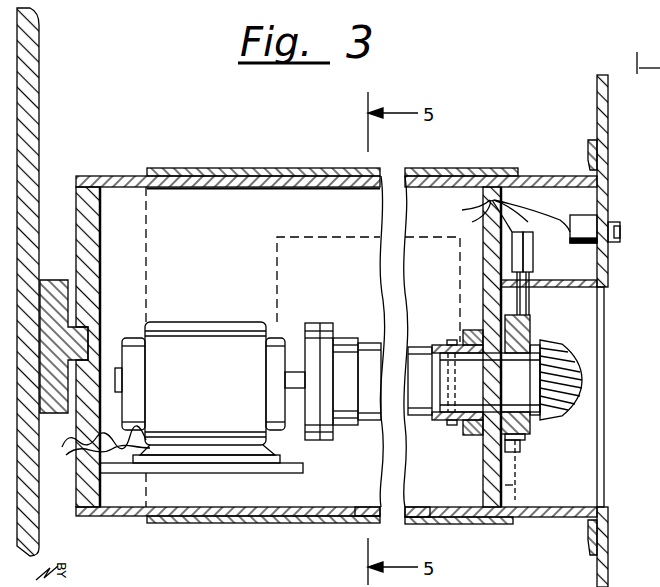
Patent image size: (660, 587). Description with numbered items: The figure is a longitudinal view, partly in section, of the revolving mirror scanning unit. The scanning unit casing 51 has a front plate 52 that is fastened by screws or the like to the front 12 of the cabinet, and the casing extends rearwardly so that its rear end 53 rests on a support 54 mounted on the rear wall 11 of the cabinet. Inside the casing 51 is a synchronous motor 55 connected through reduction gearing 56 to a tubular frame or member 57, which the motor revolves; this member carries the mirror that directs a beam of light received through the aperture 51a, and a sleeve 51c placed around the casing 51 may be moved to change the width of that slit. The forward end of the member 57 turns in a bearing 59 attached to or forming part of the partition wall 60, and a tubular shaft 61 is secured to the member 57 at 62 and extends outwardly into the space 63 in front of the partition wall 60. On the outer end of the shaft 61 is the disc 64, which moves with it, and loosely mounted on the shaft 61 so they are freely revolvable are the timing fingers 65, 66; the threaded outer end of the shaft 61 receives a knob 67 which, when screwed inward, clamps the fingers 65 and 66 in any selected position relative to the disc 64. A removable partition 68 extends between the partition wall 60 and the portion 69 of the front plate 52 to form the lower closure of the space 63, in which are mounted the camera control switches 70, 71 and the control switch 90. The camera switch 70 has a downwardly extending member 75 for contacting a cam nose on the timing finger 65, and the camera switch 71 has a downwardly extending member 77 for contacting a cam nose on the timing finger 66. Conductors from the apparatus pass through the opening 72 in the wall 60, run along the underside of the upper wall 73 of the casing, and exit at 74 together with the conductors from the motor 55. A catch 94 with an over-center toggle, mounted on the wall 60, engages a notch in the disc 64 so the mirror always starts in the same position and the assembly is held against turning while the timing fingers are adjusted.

The rear wall 11 is at (40, 514).
The front of the cabinet 12 is at (603, 152).
The scanning unit casing 51 is at (246, 182).
The aperture 51a is at (366, 518).
The sleeve 51c is at (196, 168).
The front plate 52 is at (610, 187).
The rear end 53 is at (76, 212).
The support 54 is at (50, 280).
The synchronous motor 55 is at (180, 394).
The reduction gearing 56 is at (318, 323).
The tubular frame or member 57 is at (372, 427).
The bearing 59 is at (468, 343).
The partition wall 60 is at (483, 258).
The tubular shaft 61 is at (470, 428).
The securing point 62 is at (461, 346).
The space 63 is at (596, 448).
The disc 64 is at (518, 455).
The timing finger 65 is at (520, 438).
The timing finger 66 is at (531, 425).
The knob 67 is at (562, 366).
The removable partition 68 is at (556, 318).
The portion of the front plate 69 is at (597, 266).
The camera control switch 70 is at (522, 252).
The camera control switch 71 is at (533, 252).
The opening 72 is at (516, 222).
The upper wall 73 is at (290, 190).
The conductor exit 74 is at (74, 452).
The downwardly extending member 75 is at (527, 298).
The downwardly extending member 77 is at (531, 314).
The control switch 90 is at (610, 229).
The catch 94 is at (514, 486).